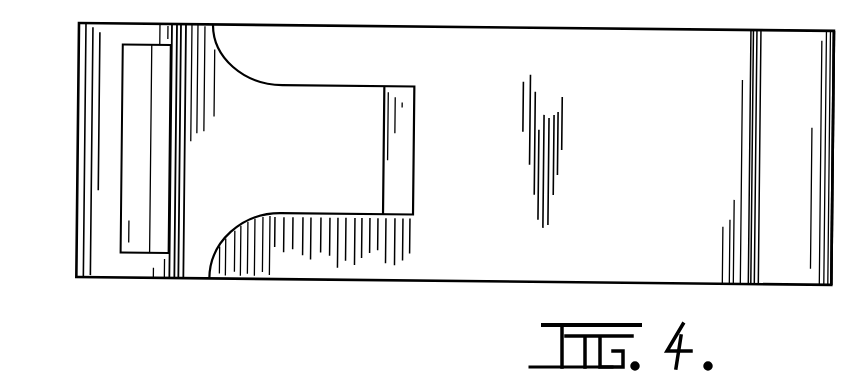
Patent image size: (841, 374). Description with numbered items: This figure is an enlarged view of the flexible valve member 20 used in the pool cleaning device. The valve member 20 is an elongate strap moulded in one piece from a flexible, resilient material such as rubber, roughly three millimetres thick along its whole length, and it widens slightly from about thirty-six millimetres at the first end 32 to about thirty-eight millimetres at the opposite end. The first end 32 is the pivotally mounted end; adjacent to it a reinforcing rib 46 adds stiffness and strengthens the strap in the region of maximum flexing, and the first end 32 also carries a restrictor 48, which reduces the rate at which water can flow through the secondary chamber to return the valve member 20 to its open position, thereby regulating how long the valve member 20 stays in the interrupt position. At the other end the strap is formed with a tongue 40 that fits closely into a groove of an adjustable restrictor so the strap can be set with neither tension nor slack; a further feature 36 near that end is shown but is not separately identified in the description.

The flexible valve member 20 is at (420, 299).
The first end 32 is at (88, 152).
The second end wall 36 is at (790, 272).
The tongue 40 is at (809, 104).
The reinforcing rib 46 is at (326, 172).
The restrictor 48 is at (137, 242).